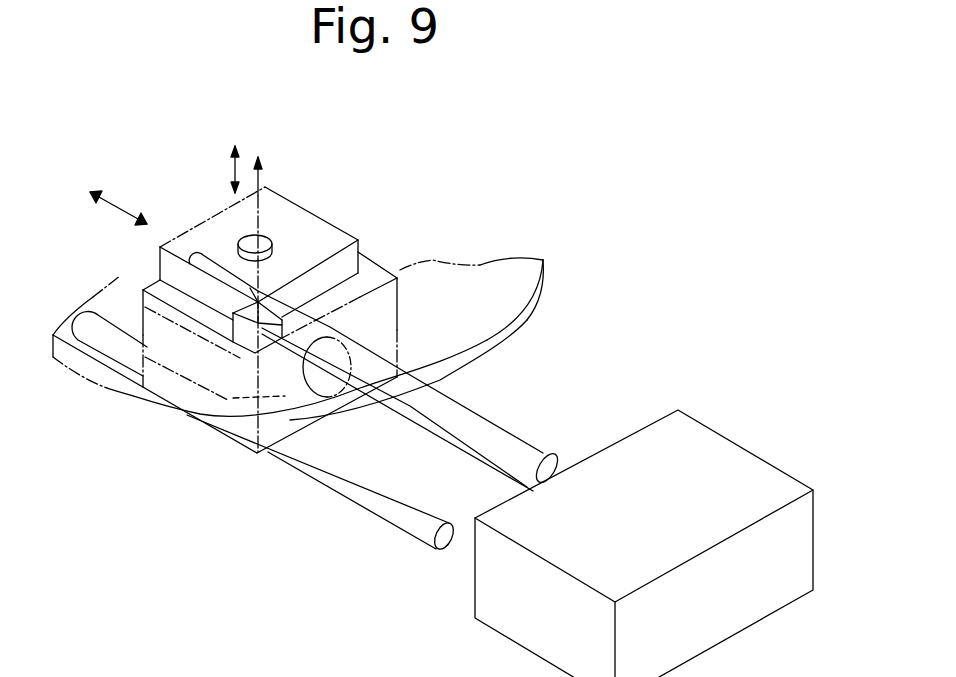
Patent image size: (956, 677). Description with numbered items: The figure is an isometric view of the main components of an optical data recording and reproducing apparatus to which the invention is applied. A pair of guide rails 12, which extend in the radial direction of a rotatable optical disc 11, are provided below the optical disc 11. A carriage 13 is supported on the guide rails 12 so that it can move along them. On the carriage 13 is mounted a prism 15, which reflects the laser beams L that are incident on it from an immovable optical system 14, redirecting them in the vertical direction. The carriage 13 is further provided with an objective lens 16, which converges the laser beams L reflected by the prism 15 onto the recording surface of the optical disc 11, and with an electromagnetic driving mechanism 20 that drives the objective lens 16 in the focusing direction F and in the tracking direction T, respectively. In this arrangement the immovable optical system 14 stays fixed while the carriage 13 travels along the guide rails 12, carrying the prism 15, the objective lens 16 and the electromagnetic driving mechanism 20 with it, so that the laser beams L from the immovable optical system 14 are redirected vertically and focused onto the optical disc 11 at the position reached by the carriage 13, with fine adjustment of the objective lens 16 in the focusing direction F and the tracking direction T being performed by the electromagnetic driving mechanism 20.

The optical disc 11 is at (527, 320).
The guide rails 12 is at (508, 428).
The carriage 13 is at (127, 392).
The immovable optical system 14 is at (652, 423).
The prism 15 is at (187, 407).
The objective lens 16 is at (273, 243).
The electromagnetic driving mechanism 20 is at (346, 257).
The laser beams L is at (427, 430).
The tracking direction T is at (121, 200).
The focusing direction F is at (231, 168).